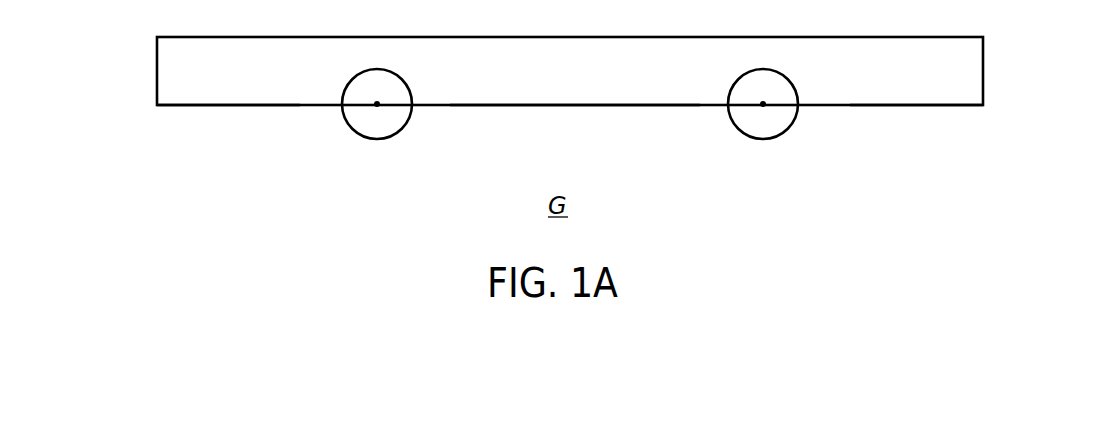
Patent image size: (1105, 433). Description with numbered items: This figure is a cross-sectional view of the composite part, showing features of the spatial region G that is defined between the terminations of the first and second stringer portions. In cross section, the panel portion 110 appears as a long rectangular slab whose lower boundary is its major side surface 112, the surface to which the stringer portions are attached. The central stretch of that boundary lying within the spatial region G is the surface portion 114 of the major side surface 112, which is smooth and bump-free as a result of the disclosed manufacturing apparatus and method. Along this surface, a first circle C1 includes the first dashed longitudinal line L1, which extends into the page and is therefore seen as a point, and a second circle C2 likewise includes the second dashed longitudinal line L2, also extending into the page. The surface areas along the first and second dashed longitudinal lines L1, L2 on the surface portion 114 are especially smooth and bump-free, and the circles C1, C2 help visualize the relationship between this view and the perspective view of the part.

The panel portion 110 is at (157, 76).
The major side surface 112 is at (241, 100).
The surface portion 114 is at (566, 100).
The first circle C1 is at (343, 115).
The first dashed longitudinal line L1 is at (375, 110).
The second circle C2 is at (799, 116).
The second dashed longitudinal line L2 is at (765, 110).